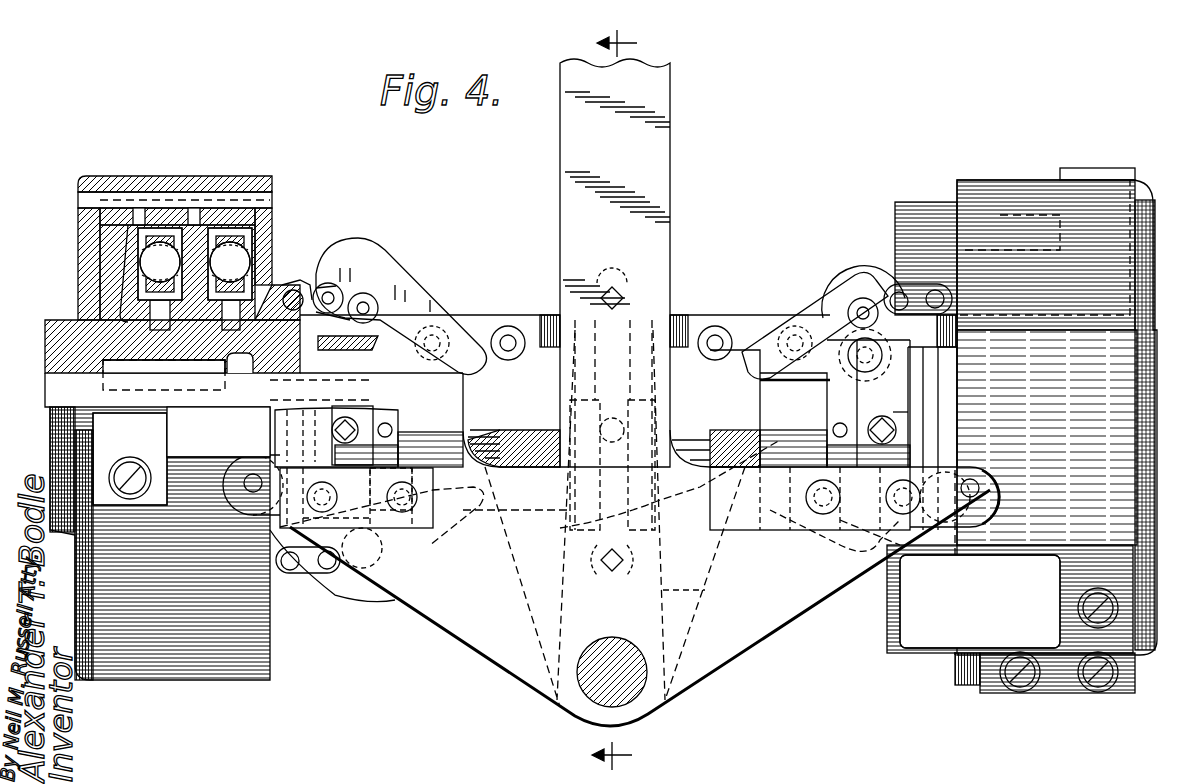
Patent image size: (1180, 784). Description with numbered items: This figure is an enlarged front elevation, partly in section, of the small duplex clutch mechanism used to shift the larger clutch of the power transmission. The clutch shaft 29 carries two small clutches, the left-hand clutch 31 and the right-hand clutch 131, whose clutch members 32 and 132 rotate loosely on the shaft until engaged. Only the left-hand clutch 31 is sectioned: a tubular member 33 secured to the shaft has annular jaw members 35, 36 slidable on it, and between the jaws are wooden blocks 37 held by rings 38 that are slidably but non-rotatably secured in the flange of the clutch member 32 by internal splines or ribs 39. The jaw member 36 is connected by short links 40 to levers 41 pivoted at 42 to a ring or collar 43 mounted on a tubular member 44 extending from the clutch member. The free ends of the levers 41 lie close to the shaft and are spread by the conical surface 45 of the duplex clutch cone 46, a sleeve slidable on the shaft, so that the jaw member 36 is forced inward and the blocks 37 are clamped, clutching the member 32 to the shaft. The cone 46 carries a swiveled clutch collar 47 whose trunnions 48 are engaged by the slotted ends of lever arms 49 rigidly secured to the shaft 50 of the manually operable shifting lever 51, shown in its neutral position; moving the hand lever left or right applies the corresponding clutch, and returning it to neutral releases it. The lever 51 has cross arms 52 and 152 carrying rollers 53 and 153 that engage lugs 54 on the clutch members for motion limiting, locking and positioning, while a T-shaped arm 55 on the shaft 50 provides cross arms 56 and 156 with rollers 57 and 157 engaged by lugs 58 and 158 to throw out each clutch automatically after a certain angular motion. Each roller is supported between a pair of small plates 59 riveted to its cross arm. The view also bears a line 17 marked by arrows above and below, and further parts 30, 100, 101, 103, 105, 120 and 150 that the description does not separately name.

The section line 17 is at (628, 400).
The clutch shaft 29 is at (68, 372).
The bearing housing block 30 is at (118, 262).
The left-hand clutch 31 is at (250, 178).
The clutch member 32 is at (112, 188).
The tubular member 33 is at (193, 352).
The annular jaw member 35 is at (252, 255).
The annular jaw member 36 is at (262, 270).
The blocks 37 is at (145, 252).
The rings 38 is at (218, 225).
The splines or ribs 39 is at (90, 197).
The short links 40 is at (305, 290).
The levers 41 is at (420, 590).
The pivot 42 is at (364, 300).
The ring or collar 43 is at (338, 338).
The tubular member 44 is at (275, 383).
The conical surface 45 is at (510, 326).
The clutch cone 46 is at (693, 343).
The clutch collar 47 is at (605, 572).
The trunnions 48 is at (559, 425).
The lever arms 49 is at (615, 518).
The shaft 50 is at (625, 690).
The manually operable shifting lever 51 is at (655, 242).
The cross arm 52 is at (390, 603).
The roller 53 is at (242, 462).
The lug or abutment 54 is at (185, 462).
The T-shaped arm 55 is at (530, 605).
The cross arm 56 is at (475, 388).
The roller 57 is at (372, 378).
The lug or abutment 58 is at (268, 450).
The small plates 59 is at (790, 540).
The slide block 100 is at (836, 418).
The lever 101 is at (812, 607).
The guide 103 is at (893, 412).
The link arm 105 is at (745, 355).
The stop 120 is at (957, 342).
The right-hand clutch 131 is at (1048, 170).
The clutch member 132 is at (990, 182).
The block 150 is at (890, 218).
The cross arm 152 is at (783, 633).
The roller 153 is at (982, 466).
The cross arm 156 is at (758, 440).
The roller 157 is at (868, 369).
The lug or abutment 158 is at (915, 655).